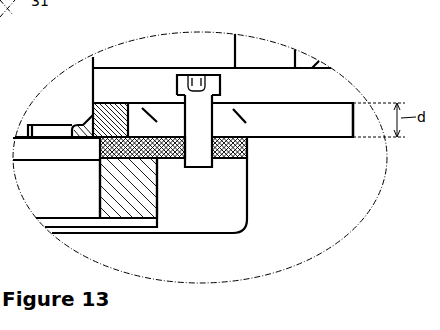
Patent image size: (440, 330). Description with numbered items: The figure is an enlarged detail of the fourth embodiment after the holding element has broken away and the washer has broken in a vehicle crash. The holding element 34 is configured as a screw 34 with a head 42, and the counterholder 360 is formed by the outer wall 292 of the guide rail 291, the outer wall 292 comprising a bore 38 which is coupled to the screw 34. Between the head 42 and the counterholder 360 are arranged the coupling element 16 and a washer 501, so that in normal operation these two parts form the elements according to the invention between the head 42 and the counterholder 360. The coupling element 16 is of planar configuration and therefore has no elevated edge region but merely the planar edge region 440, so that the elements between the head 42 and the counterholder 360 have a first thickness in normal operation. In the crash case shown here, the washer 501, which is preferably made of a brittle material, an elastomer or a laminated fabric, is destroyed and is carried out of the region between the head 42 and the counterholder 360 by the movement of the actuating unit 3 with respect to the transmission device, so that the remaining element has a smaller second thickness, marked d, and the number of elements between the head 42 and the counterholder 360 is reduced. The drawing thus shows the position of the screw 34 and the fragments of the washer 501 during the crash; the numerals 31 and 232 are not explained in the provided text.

The actuating unit 3 is at (55, 173).
The coupling element 16 is at (357, 243).
The plate end portion 31 is at (320, 128).
The holding element 34 is at (198, 127).
The bore 38 is at (235, 163).
The head 42 is at (213, 78).
The sealing block 232 is at (130, 188).
The guide rail 291 is at (193, 197).
The outer wall 292 is at (58, 121).
The counterholder 360 is at (160, 163).
The planar edge region 440 is at (113, 100).
The washer 501 is at (143, 110).